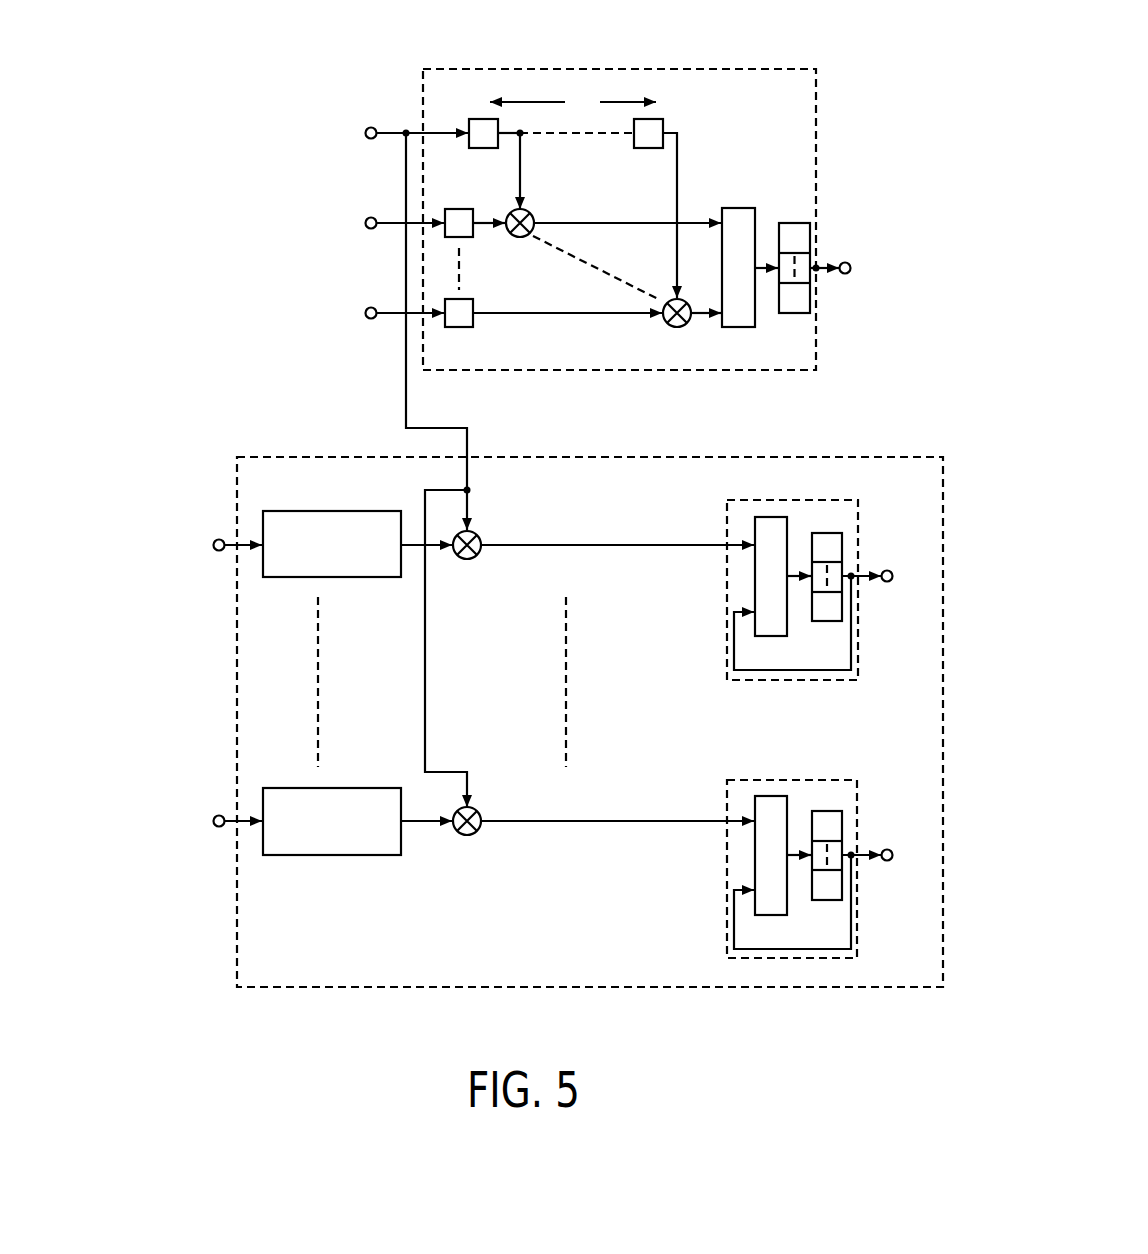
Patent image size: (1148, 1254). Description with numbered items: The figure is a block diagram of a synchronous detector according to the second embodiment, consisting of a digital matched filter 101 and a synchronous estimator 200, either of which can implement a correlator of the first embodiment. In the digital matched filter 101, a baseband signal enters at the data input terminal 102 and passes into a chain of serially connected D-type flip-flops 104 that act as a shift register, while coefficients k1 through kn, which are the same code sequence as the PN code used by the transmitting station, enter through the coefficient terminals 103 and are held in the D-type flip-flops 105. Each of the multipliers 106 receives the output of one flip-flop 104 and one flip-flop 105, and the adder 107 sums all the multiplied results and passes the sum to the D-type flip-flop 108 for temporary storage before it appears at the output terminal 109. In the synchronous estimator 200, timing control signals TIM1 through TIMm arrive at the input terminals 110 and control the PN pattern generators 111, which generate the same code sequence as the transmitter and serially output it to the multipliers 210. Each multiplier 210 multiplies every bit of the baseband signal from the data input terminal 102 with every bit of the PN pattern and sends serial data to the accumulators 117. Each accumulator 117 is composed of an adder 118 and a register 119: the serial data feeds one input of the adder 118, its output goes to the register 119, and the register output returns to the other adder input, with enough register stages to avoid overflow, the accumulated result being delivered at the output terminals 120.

The digital matched filter 101 is at (556, 68).
The data input terminal 102 is at (366, 128).
The coefficient terminals 103 is at (366, 308).
The D-type flip-flops 104 is at (690, 110).
The D-type flip-flops 105 is at (500, 355).
The multipliers 106 is at (531, 211).
The adder 107 is at (735, 208).
The D-type flip-flop 108 is at (792, 222).
The output terminal 109 is at (851, 263).
The synchronous estimator 200 is at (573, 988).
The input terminals 110 is at (215, 817).
The PN pattern generators 111 is at (352, 578).
The multipliers 210 is at (479, 535).
The accumulators 117 is at (857, 780).
The adders 118 is at (766, 796).
The registers 119 is at (830, 533).
The output terminals 120 is at (887, 570).